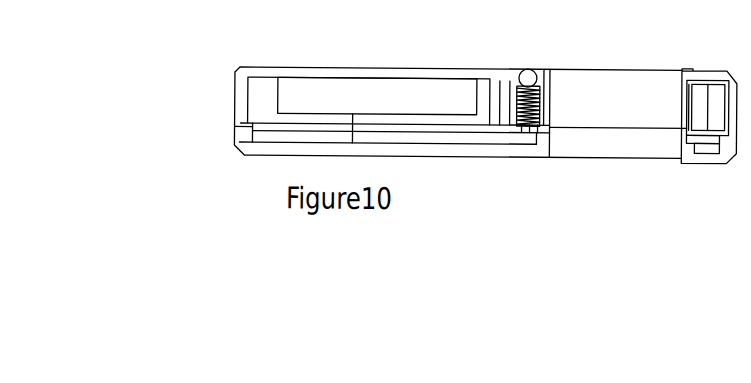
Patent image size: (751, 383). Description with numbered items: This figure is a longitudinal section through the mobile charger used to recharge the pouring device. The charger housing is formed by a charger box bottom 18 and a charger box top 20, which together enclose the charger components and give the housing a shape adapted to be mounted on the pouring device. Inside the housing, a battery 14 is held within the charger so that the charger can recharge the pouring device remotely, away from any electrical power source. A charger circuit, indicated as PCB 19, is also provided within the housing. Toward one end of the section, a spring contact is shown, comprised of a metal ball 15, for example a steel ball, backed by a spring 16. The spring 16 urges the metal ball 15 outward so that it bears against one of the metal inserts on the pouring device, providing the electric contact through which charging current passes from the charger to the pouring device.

The charger box bottom 18 is at (236, 66).
The battery 14 is at (301, 97).
The PCB 19 is at (264, 125).
The charger box top 20 is at (240, 143).
The metal ball 15 is at (527, 73).
The spring 16 is at (540, 88).